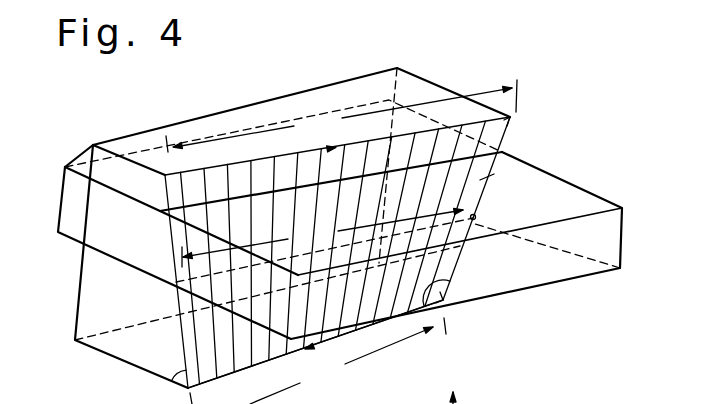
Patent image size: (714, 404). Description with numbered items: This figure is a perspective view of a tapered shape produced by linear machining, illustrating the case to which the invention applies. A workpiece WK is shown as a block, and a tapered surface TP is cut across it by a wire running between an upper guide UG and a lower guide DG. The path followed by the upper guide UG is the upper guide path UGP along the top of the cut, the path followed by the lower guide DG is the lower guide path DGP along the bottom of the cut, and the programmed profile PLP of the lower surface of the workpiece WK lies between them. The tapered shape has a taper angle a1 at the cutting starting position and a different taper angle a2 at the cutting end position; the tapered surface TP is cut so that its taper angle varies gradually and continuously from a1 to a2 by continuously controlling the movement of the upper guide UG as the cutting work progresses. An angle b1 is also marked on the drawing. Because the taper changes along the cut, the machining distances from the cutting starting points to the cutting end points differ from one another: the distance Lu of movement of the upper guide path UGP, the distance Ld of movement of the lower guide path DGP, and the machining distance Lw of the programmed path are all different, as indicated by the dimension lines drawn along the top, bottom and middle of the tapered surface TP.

The workpiece WK is at (600, 198).
The upper guide UG is at (165, 173).
The lower guide DG is at (187, 389).
The upper guide path UGP is at (510, 117).
The lower guide path DGP is at (444, 301).
The tapered surface TP is at (487, 177).
The programmed profile of the lower surface of the workpiece PLP is at (474, 215).
The taper angle at the cutting starting position a1 is at (166, 361).
The taper angle at the cutting end position a2 is at (440, 284).
The angle b1 is at (472, 403).
The distance of movement of the upper guide path Lu is at (341, 116).
The machining distance of the programmed path Lw is at (322, 238).
The distance of movement of the lower guide path Ld is at (318, 361).